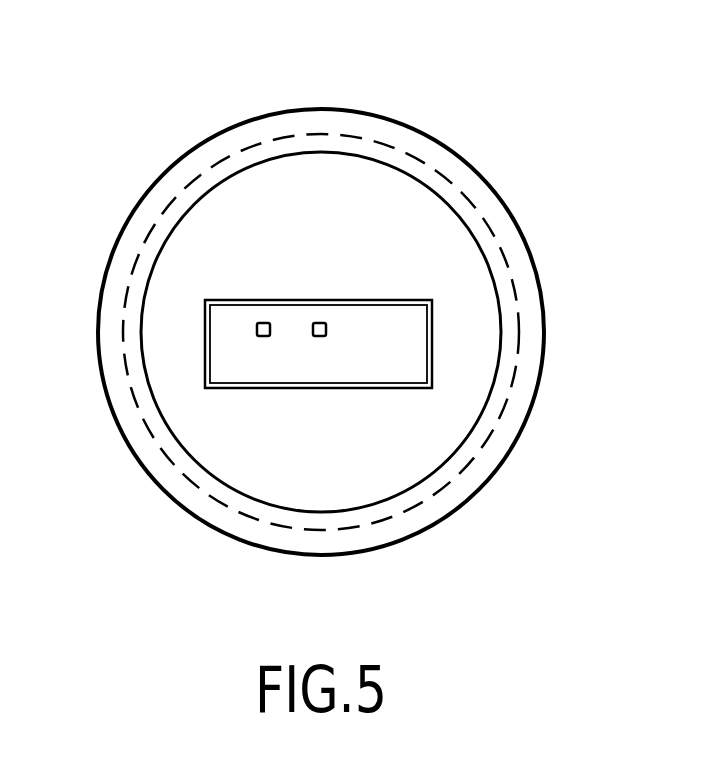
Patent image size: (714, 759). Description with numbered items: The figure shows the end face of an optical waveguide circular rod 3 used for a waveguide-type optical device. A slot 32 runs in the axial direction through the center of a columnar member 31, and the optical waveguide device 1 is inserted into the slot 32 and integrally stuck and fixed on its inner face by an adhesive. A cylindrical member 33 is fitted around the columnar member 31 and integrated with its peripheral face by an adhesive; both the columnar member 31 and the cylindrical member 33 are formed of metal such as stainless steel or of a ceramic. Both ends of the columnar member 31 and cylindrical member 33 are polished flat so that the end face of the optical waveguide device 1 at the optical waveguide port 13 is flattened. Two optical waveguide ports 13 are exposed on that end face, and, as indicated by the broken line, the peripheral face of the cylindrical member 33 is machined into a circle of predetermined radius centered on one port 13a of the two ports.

The optical waveguide device 1 is at (283, 370).
The optical waveguide circular rod 3 is at (172, 165).
The optical waveguide port 13 is at (257, 328).
The optical waveguide port 13a is at (320, 336).
The columnar member 31 is at (412, 230).
The slot 32 is at (433, 378).
The cylindrical member 33 is at (372, 150).